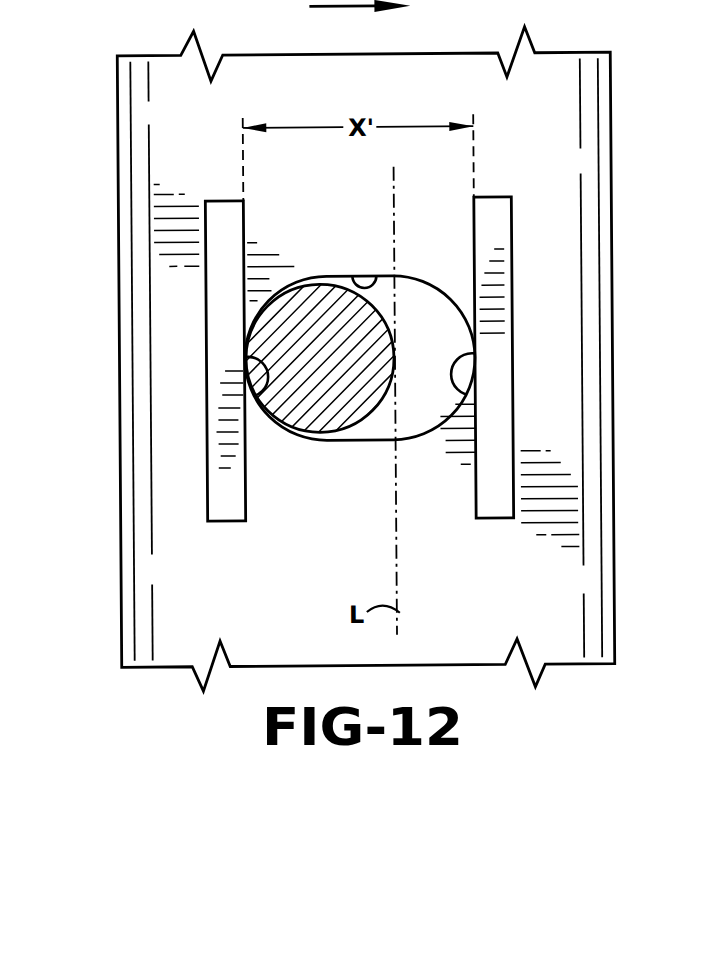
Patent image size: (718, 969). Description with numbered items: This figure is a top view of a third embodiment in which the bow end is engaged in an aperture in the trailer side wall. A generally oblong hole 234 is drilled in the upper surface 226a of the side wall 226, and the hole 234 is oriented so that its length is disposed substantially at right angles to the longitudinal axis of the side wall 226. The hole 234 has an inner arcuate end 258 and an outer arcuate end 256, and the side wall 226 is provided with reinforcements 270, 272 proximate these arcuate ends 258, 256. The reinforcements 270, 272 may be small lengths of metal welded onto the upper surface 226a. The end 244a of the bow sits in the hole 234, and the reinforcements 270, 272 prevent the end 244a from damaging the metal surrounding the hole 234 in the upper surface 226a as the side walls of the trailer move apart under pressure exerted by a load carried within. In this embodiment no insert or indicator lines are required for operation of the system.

The side wall 226 is at (532, 253).
The upper surface 226a is at (537, 597).
The hole 234 is at (354, 270).
The end of the bow 244a is at (311, 419).
The outer arcuate end 256 is at (243, 398).
The inner arcuate end 258 is at (477, 398).
The reinforcement 270 is at (222, 488).
The reinforcement 272 is at (502, 432).